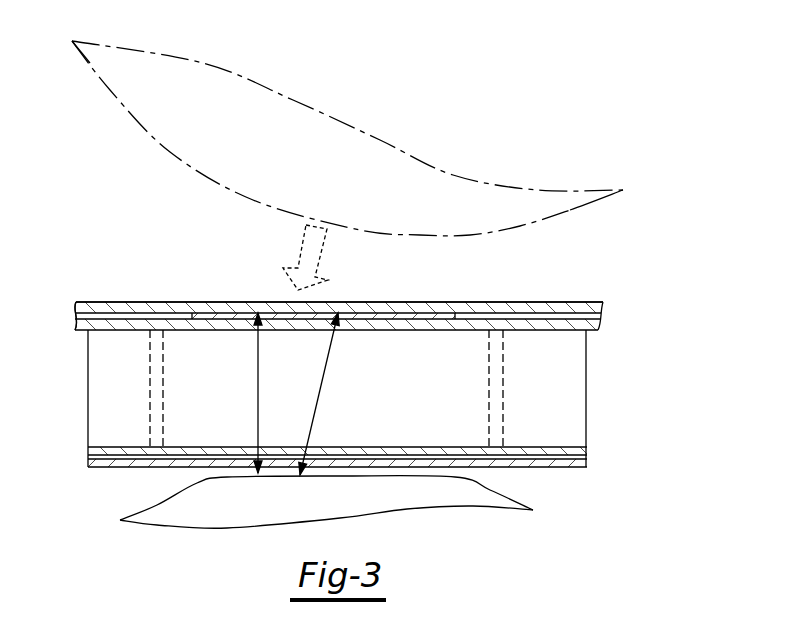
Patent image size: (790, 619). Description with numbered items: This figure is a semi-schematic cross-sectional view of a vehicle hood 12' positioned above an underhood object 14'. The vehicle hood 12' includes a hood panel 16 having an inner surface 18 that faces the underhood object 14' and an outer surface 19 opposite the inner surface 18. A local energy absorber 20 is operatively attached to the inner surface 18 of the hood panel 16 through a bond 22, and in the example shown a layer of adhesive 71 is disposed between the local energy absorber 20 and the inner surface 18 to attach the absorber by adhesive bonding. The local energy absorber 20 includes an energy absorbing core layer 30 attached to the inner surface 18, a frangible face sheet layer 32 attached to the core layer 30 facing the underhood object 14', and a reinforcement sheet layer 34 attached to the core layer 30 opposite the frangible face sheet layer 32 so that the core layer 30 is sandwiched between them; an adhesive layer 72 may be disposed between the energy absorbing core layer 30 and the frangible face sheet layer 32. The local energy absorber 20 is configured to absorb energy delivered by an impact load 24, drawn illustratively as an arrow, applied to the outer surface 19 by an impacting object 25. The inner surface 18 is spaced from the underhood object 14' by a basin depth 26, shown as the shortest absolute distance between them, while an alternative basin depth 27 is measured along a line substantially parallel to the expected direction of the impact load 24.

The vehicle hood 12' is at (347, 171).
The underhood object 14' is at (290, 502).
The hood panel 16 is at (363, 382).
The inner surface 18 is at (540, 312).
The outer surface 19 is at (84, 302).
The local energy absorber 20 is at (363, 382).
The bond 22 is at (323, 285).
The layer of adhesive 71 is at (384, 312).
The impact load 24 is at (302, 253).
The impacting object 25 is at (588, 207).
The basin depth 26 is at (256, 363).
The alternative basin depth 27 is at (315, 427).
The energy absorbing core layer 30 is at (588, 365).
The frangible face sheet layer 32 is at (357, 436).
The reinforcement sheet layer 34 is at (600, 325).
The adhesive layer 72 is at (96, 452).